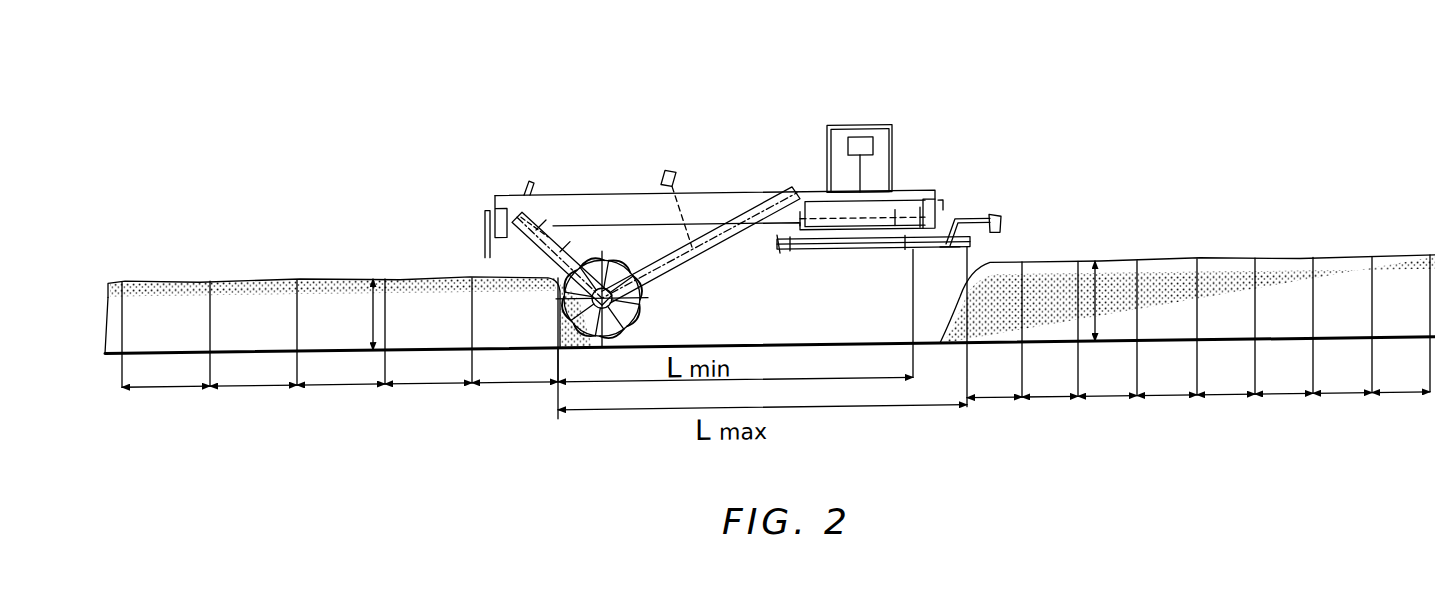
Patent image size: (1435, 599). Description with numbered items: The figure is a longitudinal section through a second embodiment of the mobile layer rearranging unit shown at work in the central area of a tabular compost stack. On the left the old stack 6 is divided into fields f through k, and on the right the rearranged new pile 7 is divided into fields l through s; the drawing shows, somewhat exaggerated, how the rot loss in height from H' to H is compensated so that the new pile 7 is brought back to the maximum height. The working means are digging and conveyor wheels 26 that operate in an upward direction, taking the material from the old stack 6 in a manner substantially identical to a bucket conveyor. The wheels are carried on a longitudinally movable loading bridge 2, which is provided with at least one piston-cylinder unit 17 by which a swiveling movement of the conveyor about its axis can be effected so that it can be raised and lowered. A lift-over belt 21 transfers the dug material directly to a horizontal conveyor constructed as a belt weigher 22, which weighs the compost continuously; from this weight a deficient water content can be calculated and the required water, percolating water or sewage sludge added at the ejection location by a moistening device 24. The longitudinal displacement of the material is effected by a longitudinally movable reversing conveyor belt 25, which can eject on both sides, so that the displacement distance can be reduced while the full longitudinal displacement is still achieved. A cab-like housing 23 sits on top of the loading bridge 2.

The loading bridge 2 is at (728, 192).
The old stack 6 is at (483, 272).
The new pile 7 is at (1042, 251).
The piston-cylinder unit 17 is at (669, 171).
The lift-over belt 21 is at (702, 262).
The belt weigher 22 is at (882, 212).
The operator cab 23 is at (859, 140).
The moistening device 24 is at (995, 222).
The reversing conveyor belt 25 is at (903, 254).
The digging and conveyor wheels 26 is at (612, 350).